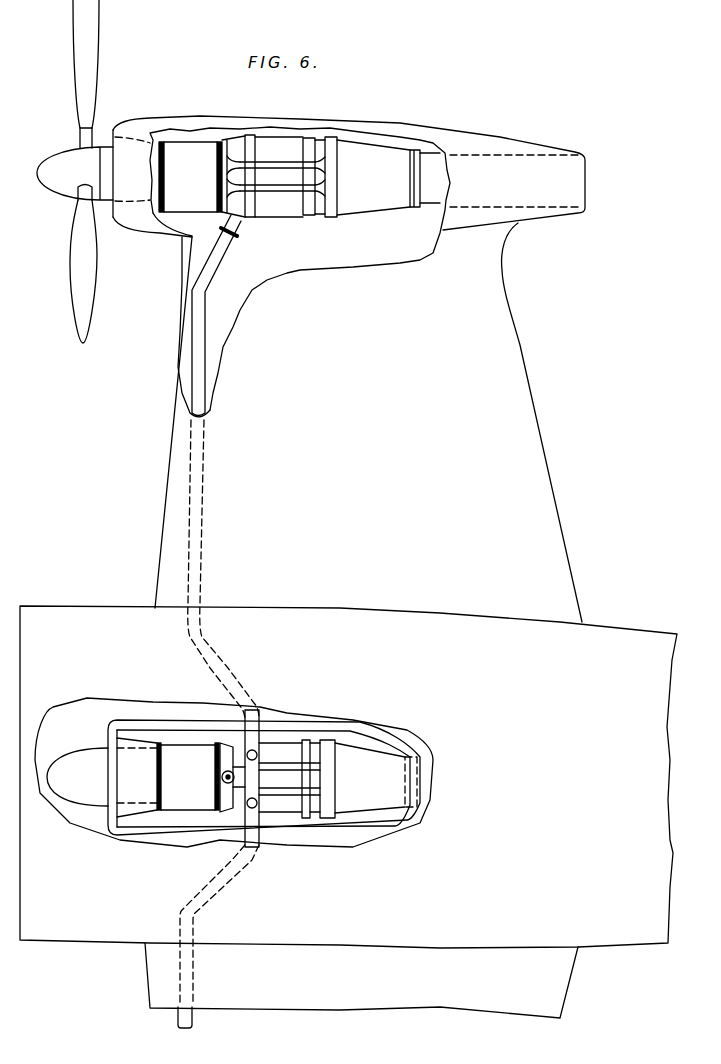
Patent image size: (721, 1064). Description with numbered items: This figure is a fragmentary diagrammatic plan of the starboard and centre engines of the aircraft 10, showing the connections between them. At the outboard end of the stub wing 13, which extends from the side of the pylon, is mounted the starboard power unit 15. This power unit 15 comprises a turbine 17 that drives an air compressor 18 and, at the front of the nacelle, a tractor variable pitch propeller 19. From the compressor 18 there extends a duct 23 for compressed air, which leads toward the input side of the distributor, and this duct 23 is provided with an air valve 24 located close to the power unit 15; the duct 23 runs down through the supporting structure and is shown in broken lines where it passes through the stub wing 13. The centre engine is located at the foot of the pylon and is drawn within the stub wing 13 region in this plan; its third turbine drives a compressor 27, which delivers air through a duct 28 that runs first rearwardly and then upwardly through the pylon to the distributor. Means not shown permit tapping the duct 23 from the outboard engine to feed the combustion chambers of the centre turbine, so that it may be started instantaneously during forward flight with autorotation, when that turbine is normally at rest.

The aircraft 10 is at (135, 607).
The stub wing 13 is at (247, 368).
The power unit 15 is at (337, 117).
The turbine 17 is at (280, 145).
The air compressor 18 is at (185, 158).
The tractor variable pitch propeller 19 is at (82, 98).
The duct 23 is at (195, 297).
The air valve 24 is at (240, 226).
The compressor 27 is at (188, 760).
The duct 28 is at (230, 775).